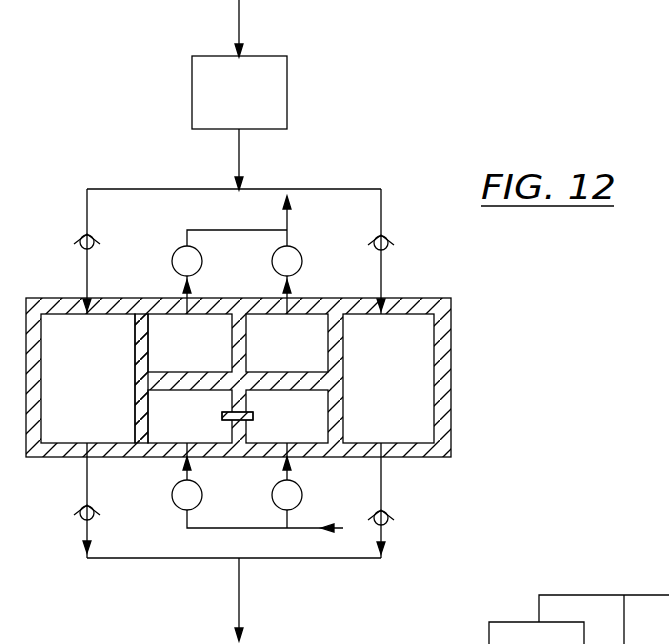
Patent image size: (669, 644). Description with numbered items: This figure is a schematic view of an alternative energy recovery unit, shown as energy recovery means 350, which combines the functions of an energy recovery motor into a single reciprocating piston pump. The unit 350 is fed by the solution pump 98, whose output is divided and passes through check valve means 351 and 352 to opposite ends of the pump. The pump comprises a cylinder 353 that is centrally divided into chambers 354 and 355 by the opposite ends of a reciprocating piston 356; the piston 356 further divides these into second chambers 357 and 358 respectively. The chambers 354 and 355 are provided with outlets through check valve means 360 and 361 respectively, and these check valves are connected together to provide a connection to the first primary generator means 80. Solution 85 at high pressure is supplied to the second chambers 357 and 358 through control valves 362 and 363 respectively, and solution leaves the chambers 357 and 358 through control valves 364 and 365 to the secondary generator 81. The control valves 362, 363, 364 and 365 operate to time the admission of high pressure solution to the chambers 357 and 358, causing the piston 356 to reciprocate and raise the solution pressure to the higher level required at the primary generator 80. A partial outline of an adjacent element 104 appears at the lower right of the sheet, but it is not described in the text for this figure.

The solution pump 98 is at (287, 90).
The energy recovery means 350 is at (355, 169).
The check valve means 351 is at (82, 233).
The check valve means 352 is at (387, 238).
The cylinder 353 is at (72, 310).
The chamber 354 is at (370, 387).
The chamber 355 is at (69, 383).
The reciprocating piston 356 is at (133, 350).
The second chamber 357 is at (268, 357).
The second chamber 358 is at (171, 357).
The check valve means 360 is at (386, 512).
The check valve means 361 is at (80, 507).
The control valve 362 is at (300, 490).
The control valve 363 is at (173, 494).
The control valve 364 is at (300, 248).
The control valve 365 is at (177, 248).
The secondary generator 81 is at (282, 215).
The solution 85 is at (321, 530).
The first primary generator means 80 is at (245, 612).
The component 104 is at (538, 621).